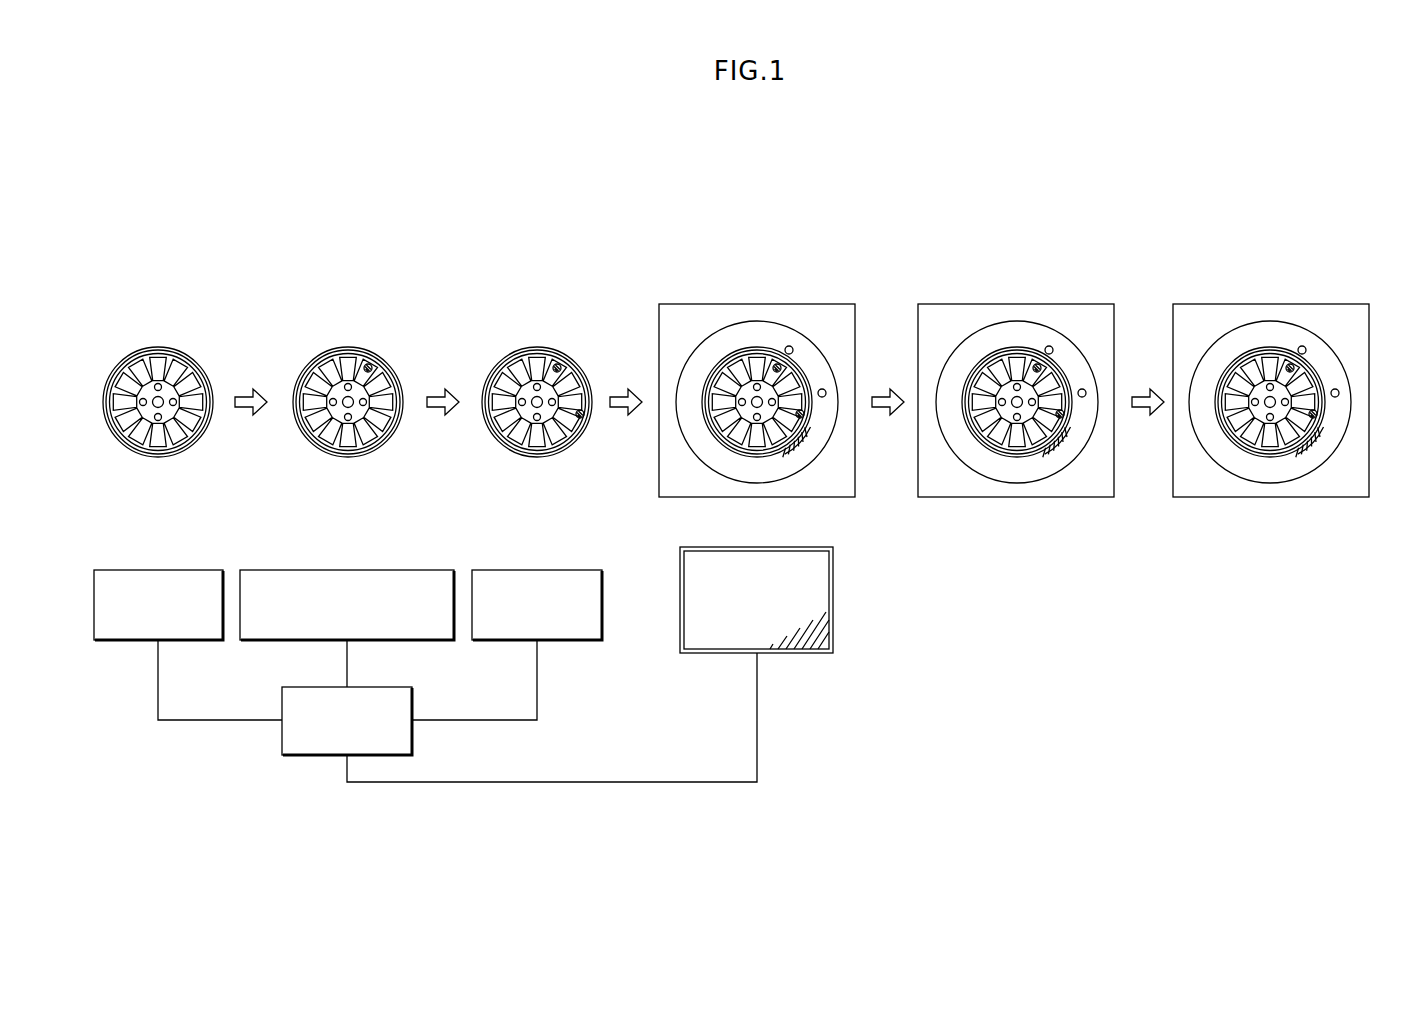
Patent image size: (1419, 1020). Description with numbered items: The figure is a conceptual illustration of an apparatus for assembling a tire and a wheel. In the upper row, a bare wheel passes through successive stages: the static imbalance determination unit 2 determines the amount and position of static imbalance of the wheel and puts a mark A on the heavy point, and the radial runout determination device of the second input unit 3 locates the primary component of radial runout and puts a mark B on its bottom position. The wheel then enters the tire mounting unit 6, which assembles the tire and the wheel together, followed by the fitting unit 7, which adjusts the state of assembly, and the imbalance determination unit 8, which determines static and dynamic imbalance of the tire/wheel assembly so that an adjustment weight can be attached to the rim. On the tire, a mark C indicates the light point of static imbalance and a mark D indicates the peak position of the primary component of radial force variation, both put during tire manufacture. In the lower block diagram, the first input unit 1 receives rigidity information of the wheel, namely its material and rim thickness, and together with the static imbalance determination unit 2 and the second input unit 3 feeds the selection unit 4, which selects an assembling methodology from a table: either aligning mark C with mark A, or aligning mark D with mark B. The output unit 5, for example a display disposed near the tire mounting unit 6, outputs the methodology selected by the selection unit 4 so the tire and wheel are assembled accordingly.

The first input unit 1 is at (183, 570).
The static imbalance determination unit 2 is at (397, 570).
The second input unit 3 is at (558, 570).
The selection unit 4 is at (412, 732).
The output unit 5 is at (833, 583).
The tire mounting unit 6 is at (687, 297).
The fitting unit 7 is at (994, 297).
The imbalance determination unit 8 is at (1219, 297).
The mark A is at (1290, 364).
The mark B is at (1379, 455).
The mark C is at (1306, 351).
The mark D is at (1338, 391).